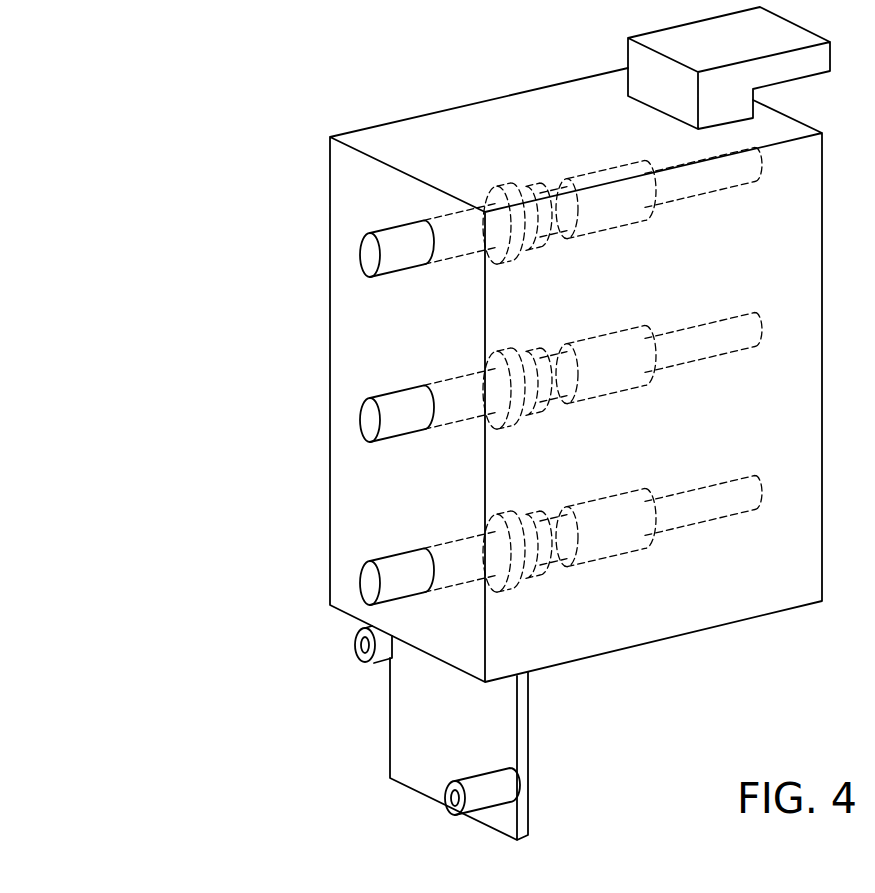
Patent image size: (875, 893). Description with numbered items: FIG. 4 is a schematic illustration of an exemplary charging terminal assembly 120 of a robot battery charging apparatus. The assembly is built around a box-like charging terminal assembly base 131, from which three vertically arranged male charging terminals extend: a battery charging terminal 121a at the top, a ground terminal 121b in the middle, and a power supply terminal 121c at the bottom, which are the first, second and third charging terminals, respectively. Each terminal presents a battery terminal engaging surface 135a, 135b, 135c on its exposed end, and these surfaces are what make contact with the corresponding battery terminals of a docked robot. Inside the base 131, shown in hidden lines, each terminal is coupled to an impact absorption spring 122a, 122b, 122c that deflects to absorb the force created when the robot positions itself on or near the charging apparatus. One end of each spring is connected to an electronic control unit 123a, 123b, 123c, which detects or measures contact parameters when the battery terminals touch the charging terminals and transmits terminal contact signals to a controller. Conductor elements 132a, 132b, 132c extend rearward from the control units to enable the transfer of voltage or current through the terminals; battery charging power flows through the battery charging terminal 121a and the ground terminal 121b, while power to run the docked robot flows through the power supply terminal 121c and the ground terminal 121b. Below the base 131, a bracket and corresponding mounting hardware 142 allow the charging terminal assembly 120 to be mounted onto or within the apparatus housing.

The charging terminal assembly 120 is at (232, 153).
The charging terminal assembly base 131 is at (464, 113).
The battery charging terminal 121a is at (390, 273).
The ground terminal 121b is at (433, 429).
The power supply terminal 121c is at (419, 549).
The impact absorption spring 122a is at (508, 262).
The impact absorption spring 122b is at (534, 415).
The impact absorption spring 122c is at (534, 578).
The electronic control unit 123a is at (612, 238).
The electronic control unit 123b is at (624, 389).
The electronic control unit 123c is at (624, 552).
The conductor element 132a is at (715, 192).
The conductor element 132b is at (718, 362).
The conductor element 132c is at (718, 525).
The battery terminal engaging surface 135a is at (362, 257).
The battery terminal engaging surface 135b is at (316, 422).
The battery terminal engaging surface 135c is at (316, 585).
The bracket and corresponding mounting hardware 142 is at (417, 723).